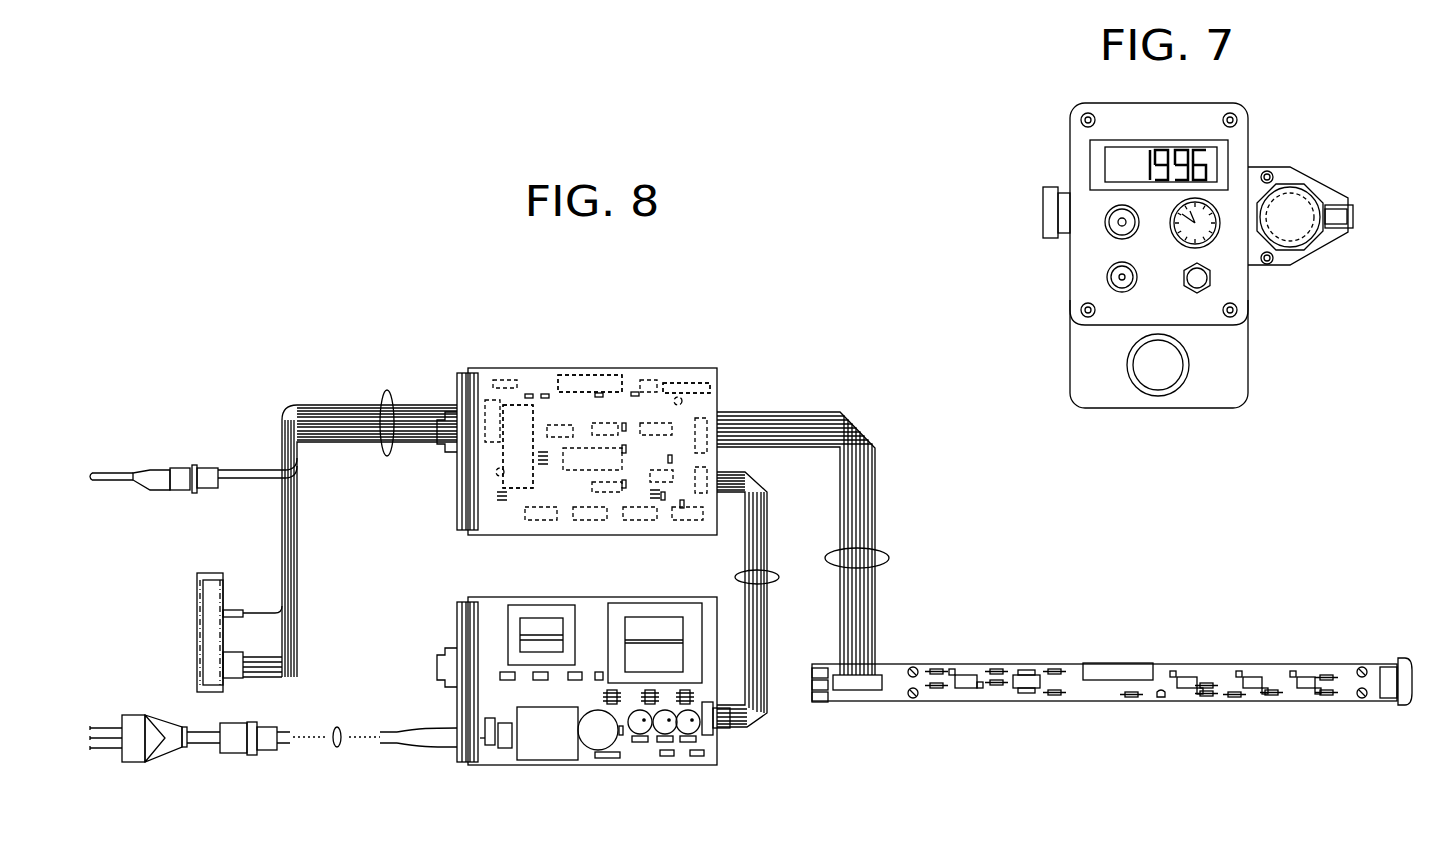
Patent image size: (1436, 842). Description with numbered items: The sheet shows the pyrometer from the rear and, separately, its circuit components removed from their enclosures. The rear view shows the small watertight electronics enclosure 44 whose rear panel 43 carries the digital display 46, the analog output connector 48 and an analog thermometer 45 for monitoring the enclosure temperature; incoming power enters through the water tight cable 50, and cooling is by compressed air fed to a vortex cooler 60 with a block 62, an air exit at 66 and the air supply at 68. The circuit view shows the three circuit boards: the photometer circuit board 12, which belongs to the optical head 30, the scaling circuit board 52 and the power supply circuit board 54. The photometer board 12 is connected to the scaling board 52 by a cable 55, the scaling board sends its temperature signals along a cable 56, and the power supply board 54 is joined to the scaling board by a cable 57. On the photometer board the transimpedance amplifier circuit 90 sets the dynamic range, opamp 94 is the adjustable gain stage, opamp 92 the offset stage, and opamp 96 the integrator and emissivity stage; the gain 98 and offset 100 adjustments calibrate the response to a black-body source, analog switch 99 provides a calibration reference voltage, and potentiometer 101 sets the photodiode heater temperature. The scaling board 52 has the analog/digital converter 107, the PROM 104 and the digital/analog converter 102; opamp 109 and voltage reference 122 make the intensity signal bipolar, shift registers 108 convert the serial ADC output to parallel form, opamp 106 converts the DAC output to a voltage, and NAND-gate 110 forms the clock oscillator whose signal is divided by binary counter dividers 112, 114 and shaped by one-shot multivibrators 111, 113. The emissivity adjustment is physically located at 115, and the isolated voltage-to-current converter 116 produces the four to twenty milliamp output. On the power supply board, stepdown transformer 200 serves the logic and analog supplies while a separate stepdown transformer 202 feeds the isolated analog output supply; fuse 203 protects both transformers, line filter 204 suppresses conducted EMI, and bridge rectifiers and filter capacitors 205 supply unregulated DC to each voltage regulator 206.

In FIG. 8, the photometer circuit board 12 is at (1104, 655).
In FIG. 8, the optical head 30 is at (1408, 640).
In FIG. 7, the rear panel 43 is at (1134, 255).
In FIG. 7, the electronics enclosure 44 is at (1211, 361).
In FIG. 7, the analog thermometer 45 is at (1235, 186).
In FIG. 7, the digital display 46 is at (1121, 151).
In FIG. 8, the digital display 46 is at (183, 608).
In FIG. 7, the analog output connector 48 is at (1057, 213).
In FIG. 8, the analog output connector 48 is at (154, 448).
In FIG. 7, the water tight cable 50 is at (1074, 271).
In FIG. 8, the water tight cable 50 is at (273, 768).
In FIG. 8, the scaling circuit board 52 is at (603, 425).
In FIG. 8, the power supply circuit board 54 is at (624, 765).
In FIG. 8, the cable 55 is at (836, 543).
In FIG. 8, the cable 56 is at (337, 506).
In FIG. 8, the cable 57 is at (737, 599).
In FIG. 7, the vortex cooler 60 is at (1316, 238).
In FIG. 7, the block 62 is at (1317, 195).
In FIG. 7, the air exit 66 is at (1237, 286).
In FIG. 7, the air supply 68 is at (1368, 202).
In FIG. 8, the transimpedance amplifier circuit 90 is at (1316, 714).
In FIG. 8, the offset adjustment opamp 92 is at (1255, 734).
In FIG. 8, the adjustable gain stage opamp 94 is at (1188, 734).
In FIG. 8, the integrator/emissivity opamp 96 is at (1036, 713).
In FIG. 8, the gain adjustment 98 is at (796, 740).
In FIG. 8, the analog switch 99 is at (946, 726).
In FIG. 8, the offset adjustment 100 is at (832, 713).
In FIG. 8, the temperature setting potentiometer 101 is at (853, 705).
In FIG. 8, the digital/analog converter 102 is at (571, 390).
In FIG. 8, the programmable read only memory 104 is at (590, 341).
In FIG. 8, the opamp 106 is at (522, 344).
In FIG. 8, the analog/digital converter 107 is at (708, 338).
In FIG. 8, the shift registers 108 is at (628, 449).
In FIG. 8, the opamp 109 is at (680, 340).
In FIG. 8, the NAND-gate 110 is at (735, 473).
In FIG. 8, the one-shot multivibrator pulse shaper 111 is at (526, 549).
In FIG. 8, the binary counter divider 112 is at (577, 546).
In FIG. 8, the one-shot multivibrator pulse shaper 113 is at (652, 550).
In FIG. 8, the binary counter divider 114 is at (746, 517).
In FIG. 8, the emissivity adjustment location 115 is at (766, 415).
In FIG. 8, the isolated voltage-to-current converter 116 is at (471, 446).
In FIG. 8, the voltage reference 122 is at (605, 337).
In FIG. 8, the stepdown transformer 200 is at (540, 643).
In FIG. 8, the stepdown transformer 202 is at (477, 629).
In FIG. 8, the fuse 203 is at (503, 780).
In FIG. 8, the line filter 204 is at (561, 774).
In FIG. 8, the bridge rectifiers and filter capacitors 205 is at (626, 681).
In FIG. 8, the voltage regulator 206 is at (720, 761).